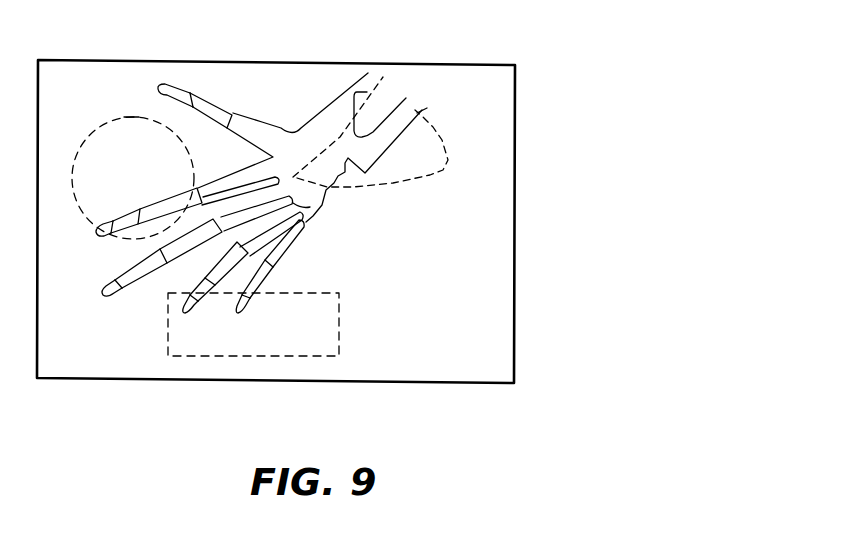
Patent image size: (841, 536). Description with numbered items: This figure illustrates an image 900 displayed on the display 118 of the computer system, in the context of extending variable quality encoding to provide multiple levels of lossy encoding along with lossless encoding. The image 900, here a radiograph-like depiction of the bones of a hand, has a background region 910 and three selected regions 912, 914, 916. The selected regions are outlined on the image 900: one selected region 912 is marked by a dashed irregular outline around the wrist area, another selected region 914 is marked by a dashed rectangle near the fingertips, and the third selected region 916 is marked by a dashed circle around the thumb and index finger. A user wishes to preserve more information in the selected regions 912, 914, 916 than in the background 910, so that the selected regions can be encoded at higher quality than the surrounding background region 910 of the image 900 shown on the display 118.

The display 118 is at (560, 112).
The image 900 is at (513, 325).
The background region 910 is at (500, 242).
The selected region 912 is at (388, 107).
The selected region 914 is at (299, 360).
The selected region 916 is at (130, 133).